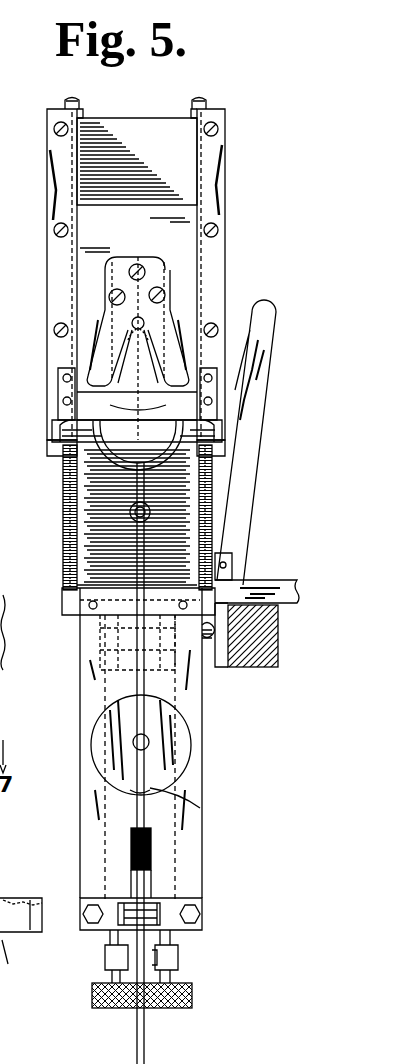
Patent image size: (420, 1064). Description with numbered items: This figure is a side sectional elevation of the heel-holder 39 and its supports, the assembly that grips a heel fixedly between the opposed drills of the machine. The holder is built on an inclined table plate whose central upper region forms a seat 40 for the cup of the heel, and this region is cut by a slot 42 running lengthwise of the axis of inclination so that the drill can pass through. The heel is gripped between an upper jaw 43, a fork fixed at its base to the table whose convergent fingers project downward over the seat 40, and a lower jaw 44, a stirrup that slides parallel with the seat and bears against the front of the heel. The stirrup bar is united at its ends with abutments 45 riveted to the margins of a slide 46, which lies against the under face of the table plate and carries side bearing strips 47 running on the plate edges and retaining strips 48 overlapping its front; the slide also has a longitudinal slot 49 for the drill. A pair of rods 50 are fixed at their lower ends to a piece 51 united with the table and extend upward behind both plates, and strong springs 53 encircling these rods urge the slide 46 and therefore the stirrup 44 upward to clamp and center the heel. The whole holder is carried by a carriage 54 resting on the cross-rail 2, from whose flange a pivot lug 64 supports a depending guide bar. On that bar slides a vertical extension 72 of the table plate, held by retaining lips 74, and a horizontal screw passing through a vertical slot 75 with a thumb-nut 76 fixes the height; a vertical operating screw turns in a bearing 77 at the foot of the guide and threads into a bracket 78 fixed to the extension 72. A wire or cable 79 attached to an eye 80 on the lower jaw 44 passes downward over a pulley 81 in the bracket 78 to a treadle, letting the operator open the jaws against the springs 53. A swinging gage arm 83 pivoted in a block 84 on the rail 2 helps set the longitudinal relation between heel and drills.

The cross-rail 2 is at (264, 667).
The heel-holder 39 is at (86, 490).
The seat 40 is at (78, 396).
The slot 42 is at (136, 440).
The upper jaw 43 is at (96, 363).
The lower jaw 44 is at (72, 418).
The abutments 45 is at (60, 380).
The slide 46 is at (90, 154).
The side bearing strips 47 is at (52, 449).
The retaining strips 48 is at (53, 271).
The longitudinal slot 49 is at (138, 257).
The rods 50 is at (196, 103).
The piece 51 is at (62, 598).
The springs 53 is at (63, 540).
The carriage 54 is at (290, 580).
The pivot lug 64 is at (110, 668).
The extension 72 is at (90, 828).
The retaining lips 74 is at (110, 854).
The vertical slot 75 is at (200, 806).
The thumb-nut 76 is at (95, 736).
The bearing 77 is at (106, 960).
The bracket 78 is at (82, 906).
The wire or cable 79 is at (138, 1052).
The eye 80 is at (94, 456).
The pulley 81 is at (174, 952).
The gage arm 83 is at (254, 426).
The block 84 is at (232, 590).